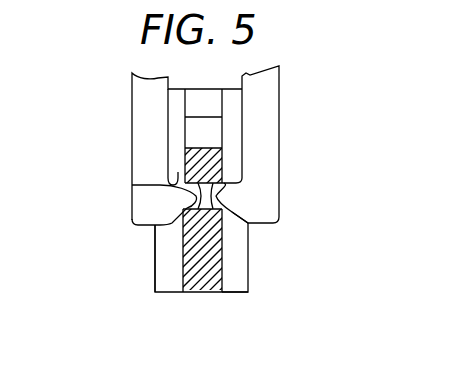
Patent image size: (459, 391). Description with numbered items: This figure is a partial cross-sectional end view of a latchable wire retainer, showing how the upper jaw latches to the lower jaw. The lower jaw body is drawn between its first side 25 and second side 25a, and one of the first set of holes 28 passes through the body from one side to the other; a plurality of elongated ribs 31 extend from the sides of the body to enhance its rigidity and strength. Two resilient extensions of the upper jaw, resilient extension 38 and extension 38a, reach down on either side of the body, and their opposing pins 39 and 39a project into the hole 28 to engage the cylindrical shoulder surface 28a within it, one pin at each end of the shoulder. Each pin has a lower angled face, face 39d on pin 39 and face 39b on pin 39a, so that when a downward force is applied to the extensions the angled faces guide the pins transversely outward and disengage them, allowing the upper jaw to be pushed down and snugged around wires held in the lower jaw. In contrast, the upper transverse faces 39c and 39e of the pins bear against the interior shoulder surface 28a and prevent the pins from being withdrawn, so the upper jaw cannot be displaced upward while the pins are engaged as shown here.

The resilient extension 38 is at (131, 122).
The extension 38a is at (280, 108).
The pin 39 is at (195, 203).
The pin 39a is at (225, 195).
The lower angled face 39b is at (231, 216).
The upper transverse face 39c is at (224, 181).
The lower angled face 39d is at (132, 184).
The upper transverse face 39e is at (176, 178).
The first set of holes 28 is at (187, 258).
The cylindrical shoulder surface 28a is at (183, 230).
The first side 25 is at (248, 278).
The second side 25a is at (155, 268).
The ribs 31 is at (235, 283).